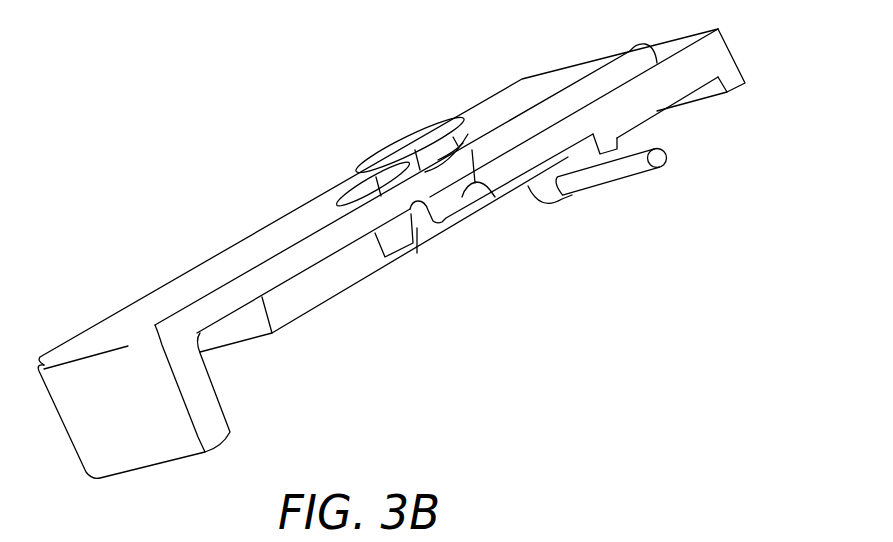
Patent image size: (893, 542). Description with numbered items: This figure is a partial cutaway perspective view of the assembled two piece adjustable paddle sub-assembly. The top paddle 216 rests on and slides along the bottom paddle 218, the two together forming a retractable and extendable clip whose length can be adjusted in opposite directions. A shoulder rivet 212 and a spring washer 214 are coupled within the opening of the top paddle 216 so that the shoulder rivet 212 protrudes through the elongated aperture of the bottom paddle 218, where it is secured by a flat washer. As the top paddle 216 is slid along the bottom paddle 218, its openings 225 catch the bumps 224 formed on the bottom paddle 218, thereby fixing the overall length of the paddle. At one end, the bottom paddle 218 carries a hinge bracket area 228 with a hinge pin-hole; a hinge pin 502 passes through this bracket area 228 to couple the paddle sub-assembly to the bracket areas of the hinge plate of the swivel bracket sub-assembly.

The shoulder rivet 212 is at (428, 128).
The spring washer 214 is at (427, 172).
The top paddle 216 is at (135, 313).
The bottom paddle 218 is at (303, 300).
The bumps 224 is at (415, 230).
The openings 225 is at (485, 190).
The hinge bracket area 228 is at (548, 190).
The hinge pin 502 is at (637, 177).